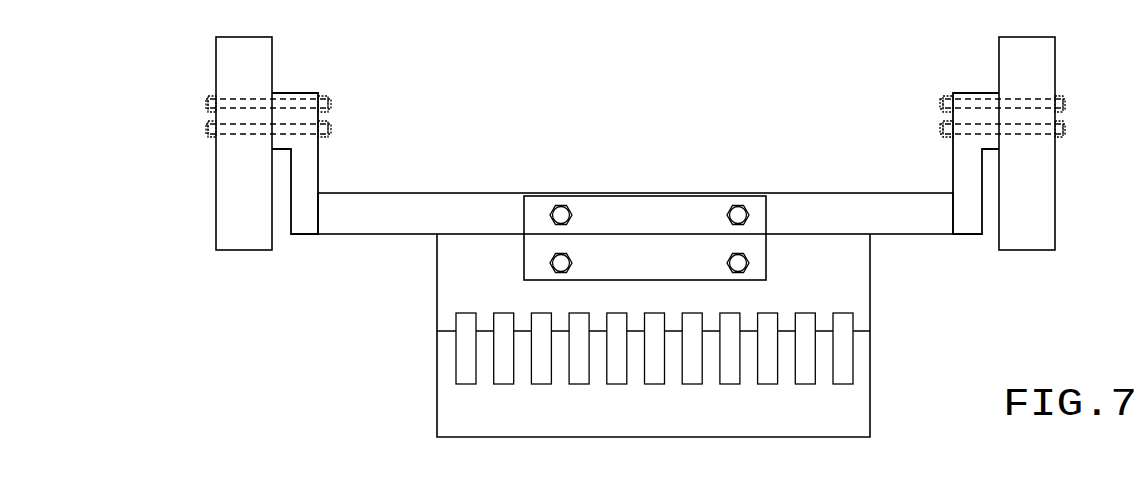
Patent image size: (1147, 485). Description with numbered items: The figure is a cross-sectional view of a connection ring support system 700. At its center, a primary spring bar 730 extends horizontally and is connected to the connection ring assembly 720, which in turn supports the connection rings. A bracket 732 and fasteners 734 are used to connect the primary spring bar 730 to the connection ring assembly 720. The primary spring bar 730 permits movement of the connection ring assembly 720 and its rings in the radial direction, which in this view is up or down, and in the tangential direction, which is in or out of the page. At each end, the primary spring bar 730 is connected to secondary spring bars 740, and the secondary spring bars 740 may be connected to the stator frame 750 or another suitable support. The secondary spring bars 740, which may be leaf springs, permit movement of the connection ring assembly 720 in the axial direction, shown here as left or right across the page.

The connection ring support system 700 is at (740, 106).
The connection ring assembly 720 is at (855, 291).
The primary spring bar 730 is at (457, 206).
The bracket 732 is at (668, 256).
The fasteners 734 is at (560, 205).
The secondary spring bars 740 is at (312, 153).
The stator frame 750 is at (249, 65).